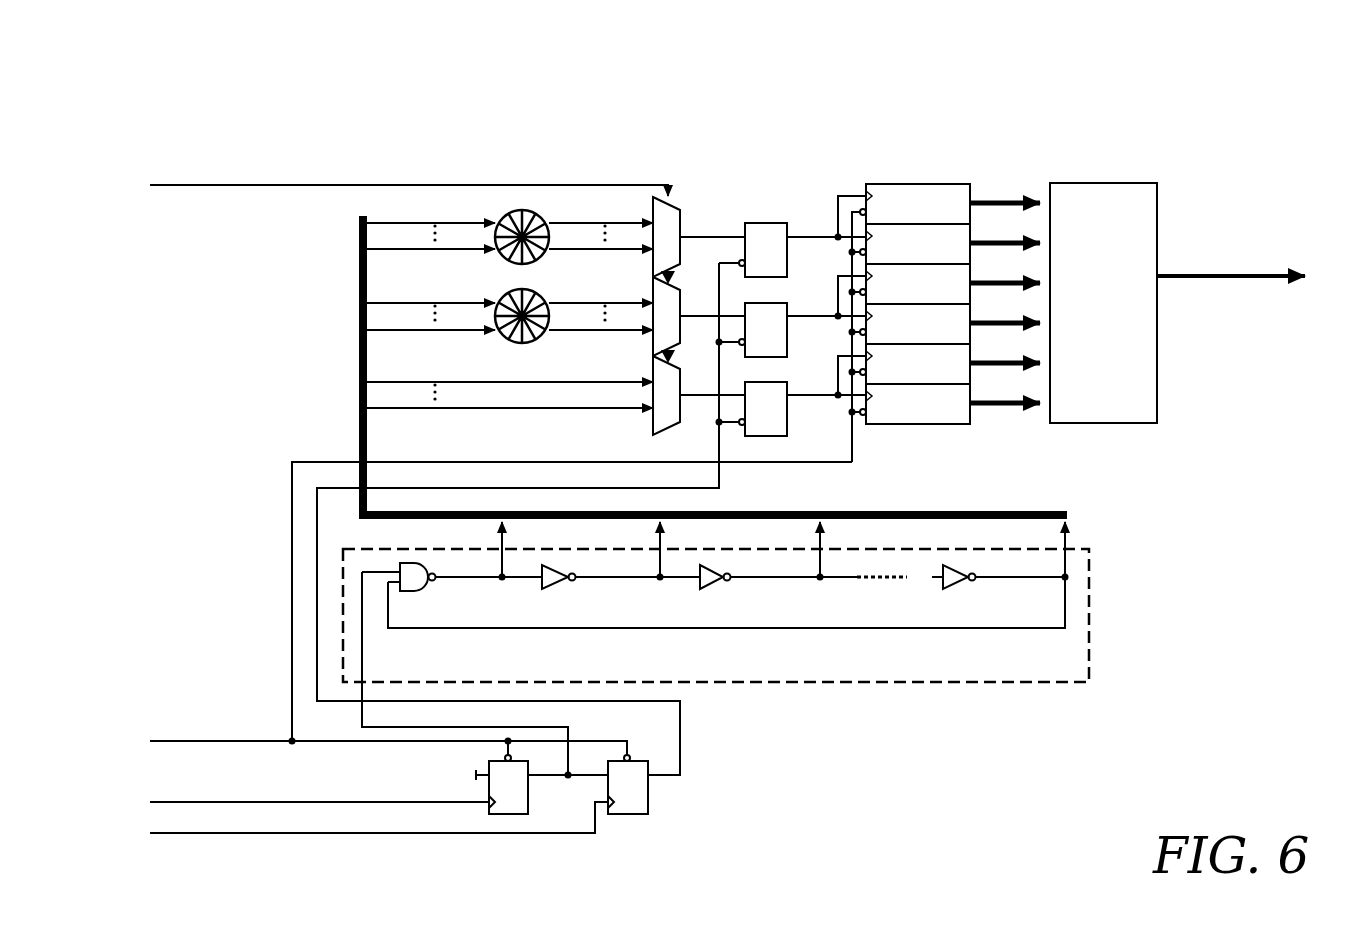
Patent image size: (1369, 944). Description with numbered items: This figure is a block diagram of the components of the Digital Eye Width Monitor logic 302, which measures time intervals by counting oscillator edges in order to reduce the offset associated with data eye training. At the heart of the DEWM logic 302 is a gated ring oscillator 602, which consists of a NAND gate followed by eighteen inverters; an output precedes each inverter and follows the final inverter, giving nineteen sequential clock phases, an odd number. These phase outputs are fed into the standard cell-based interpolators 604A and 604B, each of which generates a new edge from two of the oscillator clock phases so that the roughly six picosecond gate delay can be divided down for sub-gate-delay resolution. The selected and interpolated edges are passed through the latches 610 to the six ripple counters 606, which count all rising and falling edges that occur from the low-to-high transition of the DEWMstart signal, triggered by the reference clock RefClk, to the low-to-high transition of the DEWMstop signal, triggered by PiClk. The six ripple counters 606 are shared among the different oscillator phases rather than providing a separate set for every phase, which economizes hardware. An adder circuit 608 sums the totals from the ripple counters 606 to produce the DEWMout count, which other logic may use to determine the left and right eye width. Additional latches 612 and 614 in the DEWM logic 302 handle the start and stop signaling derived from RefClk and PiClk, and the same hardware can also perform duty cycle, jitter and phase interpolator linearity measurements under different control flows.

The DEWM logic 302 is at (1208, 104).
The gated ring oscillator 602 is at (718, 648).
The standard cell-based interpolator 604A is at (527, 210).
The standard cell-based interpolator 604B is at (510, 297).
The ripple counters 606 is at (900, 183).
The adder circuit 608 is at (1103, 303).
The latches 610 is at (762, 223).
The latch 612 is at (643, 814).
The latch 614 is at (528, 814).